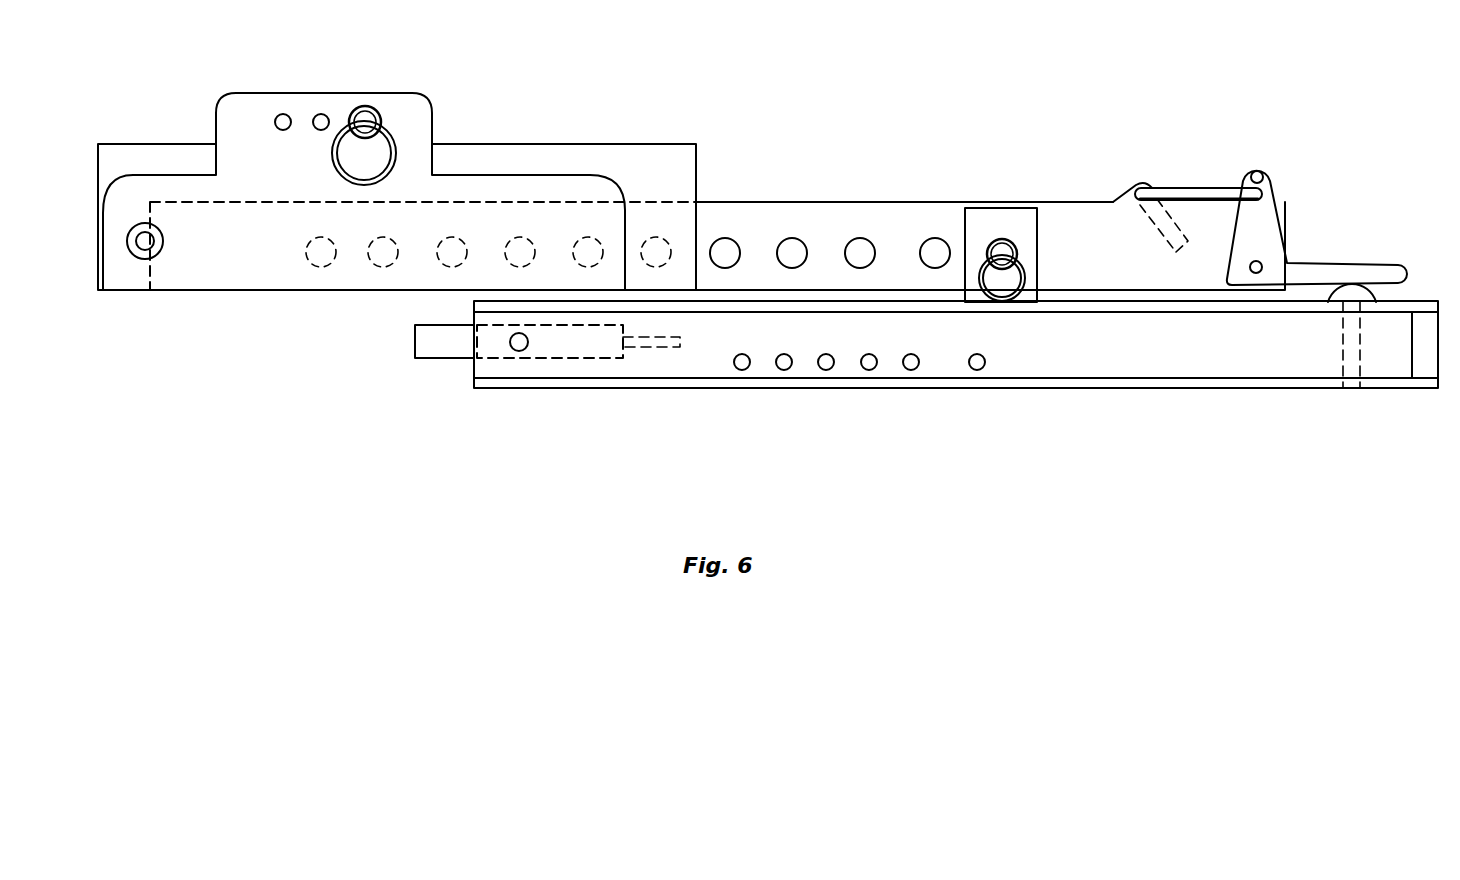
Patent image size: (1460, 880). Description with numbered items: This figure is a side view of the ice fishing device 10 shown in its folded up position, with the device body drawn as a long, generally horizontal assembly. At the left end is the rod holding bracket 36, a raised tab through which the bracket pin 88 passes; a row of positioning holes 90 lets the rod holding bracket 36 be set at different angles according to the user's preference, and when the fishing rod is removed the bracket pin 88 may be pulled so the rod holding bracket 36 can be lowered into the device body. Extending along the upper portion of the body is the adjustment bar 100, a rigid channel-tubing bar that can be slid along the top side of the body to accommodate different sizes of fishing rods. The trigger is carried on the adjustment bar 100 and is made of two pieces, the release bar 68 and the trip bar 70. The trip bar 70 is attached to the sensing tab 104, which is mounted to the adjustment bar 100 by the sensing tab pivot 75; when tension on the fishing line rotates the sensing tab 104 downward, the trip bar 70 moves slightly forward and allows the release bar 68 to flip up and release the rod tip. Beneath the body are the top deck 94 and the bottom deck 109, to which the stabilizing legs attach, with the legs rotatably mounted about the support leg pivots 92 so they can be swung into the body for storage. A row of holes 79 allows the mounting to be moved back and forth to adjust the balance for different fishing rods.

The ice fishing device 10 is at (644, 112).
The rod holding bracket 36 is at (552, 118).
The positioning holes 90 is at (321, 113).
The bracket pin 88 is at (365, 106).
The adjustment bar 100 is at (897, 220).
The release bar 68 is at (1203, 192).
The trip bar 70 is at (1258, 171).
The sensing tab 104 is at (1260, 218).
The sensing tab pivot 75 is at (1280, 250).
The bottom deck 109 is at (1045, 390).
The top deck 94 is at (1145, 305).
The support leg pivots 92 is at (1350, 390).
The holes 79 is at (742, 370).